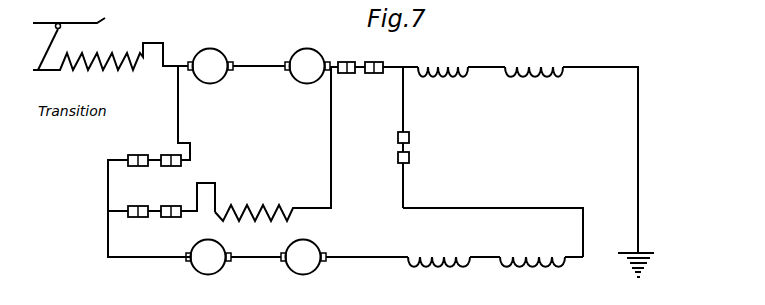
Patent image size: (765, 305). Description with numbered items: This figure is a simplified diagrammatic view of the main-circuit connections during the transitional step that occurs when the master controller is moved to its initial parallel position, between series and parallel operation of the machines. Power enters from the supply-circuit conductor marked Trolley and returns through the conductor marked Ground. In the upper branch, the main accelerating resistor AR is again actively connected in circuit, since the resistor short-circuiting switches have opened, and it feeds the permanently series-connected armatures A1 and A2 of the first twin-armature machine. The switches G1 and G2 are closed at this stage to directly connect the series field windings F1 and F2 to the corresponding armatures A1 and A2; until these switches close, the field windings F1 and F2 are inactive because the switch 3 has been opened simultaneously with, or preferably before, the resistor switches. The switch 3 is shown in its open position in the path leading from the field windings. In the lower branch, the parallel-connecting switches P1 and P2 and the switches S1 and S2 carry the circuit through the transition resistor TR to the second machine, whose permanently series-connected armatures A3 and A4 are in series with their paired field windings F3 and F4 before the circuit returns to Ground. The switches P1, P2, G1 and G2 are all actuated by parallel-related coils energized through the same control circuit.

The supply-circuit conductor Trolley is at (94, 41).
The main accelerating resistor AR is at (77, 61).
The armature A1 is at (210, 66).
The armature A2 is at (307, 66).
The armature A3 is at (208, 257).
The armature A4 is at (303, 257).
The main-circuit switch G1 is at (346, 59).
The main-circuit switch G2 is at (374, 59).
The field-magnet winding F1 is at (425, 67).
The field-magnet winding F2 is at (521, 70).
The field-magnet winding F3 is at (427, 257).
The field-magnet winding F4 is at (522, 258).
The switch 3 is at (409, 137).
The main-circuit switch P1 is at (138, 166).
The main-circuit switch P2 is at (171, 166).
The main-circuit switch S1 is at (139, 217).
The main-circuit switch S2 is at (172, 217).
The transition resistor TR is at (243, 212).
The supply-circuit conductor Ground is at (647, 265).